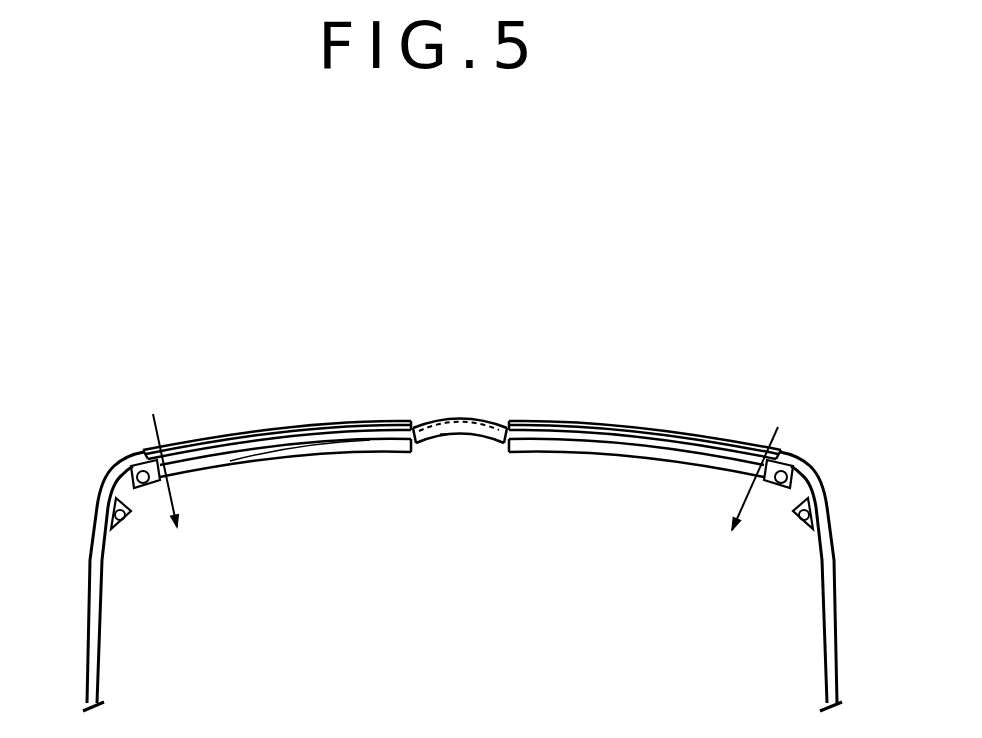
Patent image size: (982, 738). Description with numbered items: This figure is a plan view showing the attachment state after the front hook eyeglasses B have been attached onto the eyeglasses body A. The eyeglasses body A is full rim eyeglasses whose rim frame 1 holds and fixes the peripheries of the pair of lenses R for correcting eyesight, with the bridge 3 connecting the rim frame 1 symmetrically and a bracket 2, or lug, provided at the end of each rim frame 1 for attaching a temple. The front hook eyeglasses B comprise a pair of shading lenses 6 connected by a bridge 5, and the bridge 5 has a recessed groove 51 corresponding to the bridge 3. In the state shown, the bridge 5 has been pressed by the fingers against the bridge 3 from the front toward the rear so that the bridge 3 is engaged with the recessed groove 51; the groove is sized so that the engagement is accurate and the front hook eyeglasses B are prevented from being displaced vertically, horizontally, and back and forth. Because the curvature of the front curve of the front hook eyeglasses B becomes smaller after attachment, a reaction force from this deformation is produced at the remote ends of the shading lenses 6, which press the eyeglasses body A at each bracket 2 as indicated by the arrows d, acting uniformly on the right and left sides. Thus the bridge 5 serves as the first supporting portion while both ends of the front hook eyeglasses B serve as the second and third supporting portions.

The rim frame 1 is at (333, 452).
The bracket 2 is at (118, 467).
The bridge 3 is at (448, 436).
The bridge 5 is at (442, 418).
The recessed groove 51 is at (473, 430).
The shading lenses 6 is at (277, 424).
The eyeglasses body A is at (815, 479).
The front hook eyeglasses B is at (613, 423).
The lenses R is at (268, 444).
The arrows d is at (474, 450).